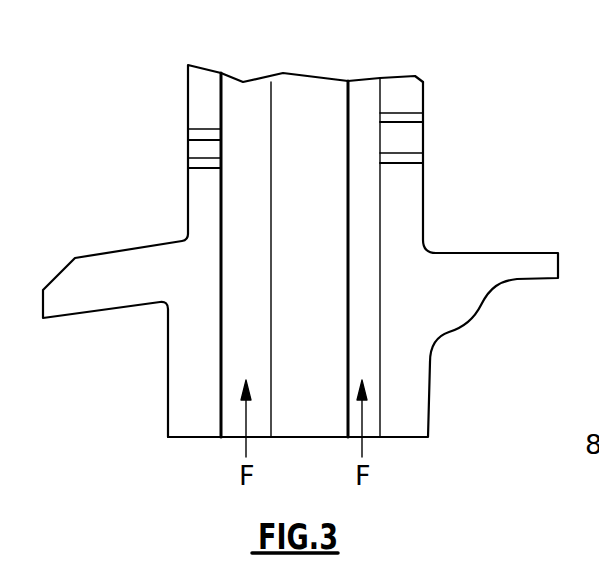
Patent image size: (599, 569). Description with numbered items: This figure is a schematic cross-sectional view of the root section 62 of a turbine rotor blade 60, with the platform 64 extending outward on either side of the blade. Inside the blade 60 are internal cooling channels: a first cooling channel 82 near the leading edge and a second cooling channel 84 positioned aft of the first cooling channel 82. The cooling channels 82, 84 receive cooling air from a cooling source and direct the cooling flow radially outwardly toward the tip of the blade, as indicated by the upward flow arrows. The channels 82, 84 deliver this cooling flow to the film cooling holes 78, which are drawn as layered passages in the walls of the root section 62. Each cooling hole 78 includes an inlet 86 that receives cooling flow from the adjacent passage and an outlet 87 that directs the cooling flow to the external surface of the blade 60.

The turbine rotor blade 60 is at (516, 175).
The root section 62 is at (413, 409).
The platform 64 is at (88, 276).
The film cooling holes 78 is at (200, 157).
The first cooling channel 82 is at (240, 363).
The second cooling channel 84 is at (365, 254).
The inlet 86 is at (378, 117).
The outlet 87 is at (423, 113).